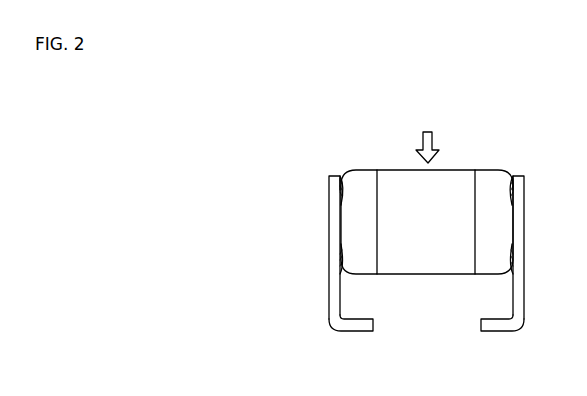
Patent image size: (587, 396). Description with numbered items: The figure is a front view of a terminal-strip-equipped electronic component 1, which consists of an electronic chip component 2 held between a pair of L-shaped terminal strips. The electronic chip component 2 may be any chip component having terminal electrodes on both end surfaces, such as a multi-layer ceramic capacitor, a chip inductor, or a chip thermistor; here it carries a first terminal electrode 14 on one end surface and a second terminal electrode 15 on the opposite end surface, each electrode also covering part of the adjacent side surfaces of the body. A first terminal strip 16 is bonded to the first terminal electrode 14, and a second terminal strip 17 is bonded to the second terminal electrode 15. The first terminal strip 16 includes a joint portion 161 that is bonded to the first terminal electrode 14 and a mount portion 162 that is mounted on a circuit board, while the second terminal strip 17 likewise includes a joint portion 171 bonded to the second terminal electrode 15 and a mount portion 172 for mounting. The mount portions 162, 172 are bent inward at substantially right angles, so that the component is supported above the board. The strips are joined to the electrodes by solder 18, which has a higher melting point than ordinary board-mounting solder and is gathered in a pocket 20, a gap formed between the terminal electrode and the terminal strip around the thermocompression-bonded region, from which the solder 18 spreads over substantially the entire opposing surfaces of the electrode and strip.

The terminal-strip-equipped electronic component 1 is at (547, 98).
The electronic chip component 2 is at (423, 279).
The first terminal electrode 14 is at (361, 172).
The second terminal electrode 15 is at (484, 176).
The first terminal strip 16 is at (324, 285).
The joint portion 161 is at (331, 233).
The mount portion 162 is at (354, 329).
The second terminal strip 17 is at (530, 282).
The joint portion 171 is at (521, 233).
The mount portion 172 is at (497, 329).
The solder 18 is at (341, 178).
The pocket 20 is at (341, 185).